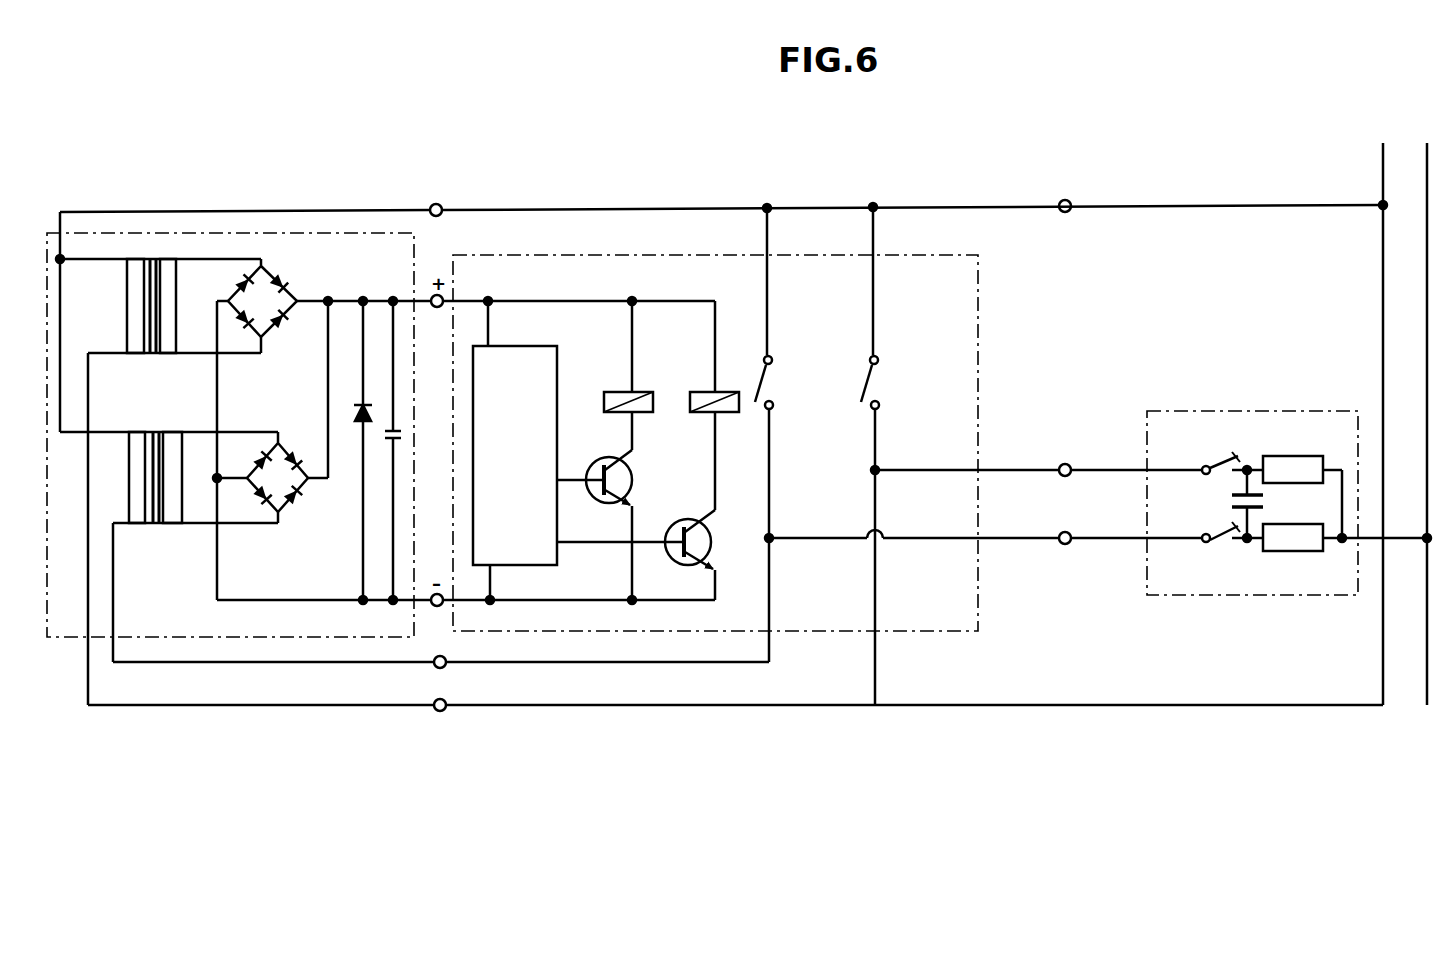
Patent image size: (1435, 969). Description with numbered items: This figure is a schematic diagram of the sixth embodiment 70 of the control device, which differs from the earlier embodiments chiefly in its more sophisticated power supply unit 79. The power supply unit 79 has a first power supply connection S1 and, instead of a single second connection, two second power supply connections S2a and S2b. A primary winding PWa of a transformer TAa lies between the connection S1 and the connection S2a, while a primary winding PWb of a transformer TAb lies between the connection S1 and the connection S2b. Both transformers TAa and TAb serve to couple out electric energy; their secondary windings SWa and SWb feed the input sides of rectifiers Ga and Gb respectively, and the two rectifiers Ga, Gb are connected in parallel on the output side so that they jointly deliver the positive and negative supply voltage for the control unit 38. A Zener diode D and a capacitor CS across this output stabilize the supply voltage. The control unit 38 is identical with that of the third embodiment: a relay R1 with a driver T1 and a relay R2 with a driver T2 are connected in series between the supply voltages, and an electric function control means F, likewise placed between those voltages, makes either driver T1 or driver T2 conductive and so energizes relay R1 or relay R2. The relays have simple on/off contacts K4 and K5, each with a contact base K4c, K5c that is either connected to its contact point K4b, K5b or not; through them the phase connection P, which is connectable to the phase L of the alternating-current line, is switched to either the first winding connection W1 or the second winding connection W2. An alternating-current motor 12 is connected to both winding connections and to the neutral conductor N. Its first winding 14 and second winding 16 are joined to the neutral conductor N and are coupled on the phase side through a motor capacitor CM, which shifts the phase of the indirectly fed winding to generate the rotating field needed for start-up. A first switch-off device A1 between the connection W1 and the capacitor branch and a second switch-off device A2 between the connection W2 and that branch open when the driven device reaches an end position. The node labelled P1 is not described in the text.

The sixth embodiment 70 is at (613, 170).
The power supply unit 79 is at (296, 226).
The control unit 38 is at (661, 248).
The alternating-current motor 12 is at (1259, 407).
The first winding 14 is at (1292, 549).
The second winding 16 is at (1298, 457).
The transformer TAb is at (155, 279).
The transformer TAa is at (154, 507).
The primary winding PWb is at (129, 348).
The primary winding PWa is at (131, 526).
The secondary winding SWb is at (170, 301).
The secondary winding SWa is at (186, 416).
The rectifier Gb is at (286, 278).
The rectifier Ga is at (292, 511).
The Zener diode D is at (358, 404).
The capacitor CS is at (391, 441).
The first power supply connection S1 is at (443, 204).
The second power supply connection S2a is at (446, 666).
The second power supply connection S2b is at (446, 709).
The function control means F is at (515, 450).
The relay R1 is at (611, 392).
The relay R2 is at (693, 392).
The driver T1 is at (598, 462).
The driver T2 is at (677, 522).
The contact K4 is at (777, 435).
The contact base K4c is at (771, 376).
The contact point K4b is at (772, 410).
The contact K5 is at (882, 456).
The contact base K5c is at (877, 376).
The contact point K5b is at (878, 410).
The second winding connection W2 is at (1038, 447).
The first winding connection W1 is at (985, 564).
The phase connection P is at (1064, 199).
The phase L is at (1380, 413).
The neutral conductor N is at (1426, 413).
The second switch-off device A2 is at (1216, 464).
The first switch-off device A1 is at (1229, 530).
The motor capacitor CM is at (1230, 502).
The node P1 is at (1246, 545).